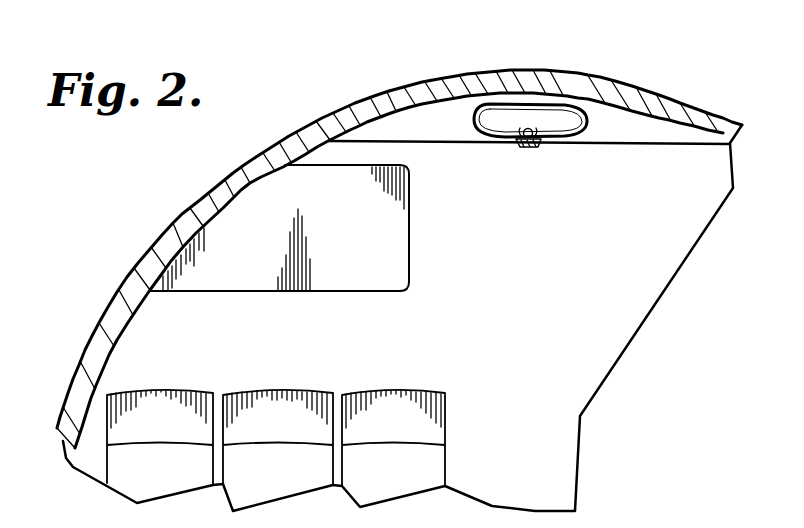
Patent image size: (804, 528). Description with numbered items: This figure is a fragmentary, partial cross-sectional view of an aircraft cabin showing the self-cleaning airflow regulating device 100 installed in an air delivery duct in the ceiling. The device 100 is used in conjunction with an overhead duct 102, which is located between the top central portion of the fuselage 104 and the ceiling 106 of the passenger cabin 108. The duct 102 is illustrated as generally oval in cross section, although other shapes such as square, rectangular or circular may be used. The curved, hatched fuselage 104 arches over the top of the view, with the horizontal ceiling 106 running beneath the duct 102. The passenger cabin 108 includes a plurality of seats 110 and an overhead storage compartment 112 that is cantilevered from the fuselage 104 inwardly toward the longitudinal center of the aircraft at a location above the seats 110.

The self-cleaning airflow regulating device 100 is at (541, 152).
The overhead duct 102 is at (588, 118).
The fuselage 104 is at (420, 92).
The ceiling 106 is at (670, 146).
The passenger cabin 108 is at (554, 362).
The seats 110 is at (170, 391).
The overhead storage compartment 112 is at (272, 293).